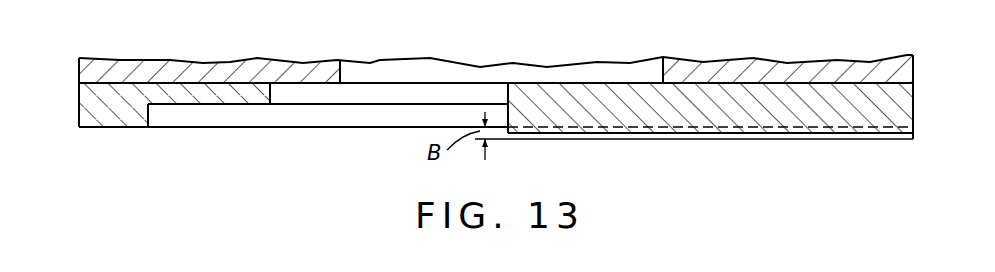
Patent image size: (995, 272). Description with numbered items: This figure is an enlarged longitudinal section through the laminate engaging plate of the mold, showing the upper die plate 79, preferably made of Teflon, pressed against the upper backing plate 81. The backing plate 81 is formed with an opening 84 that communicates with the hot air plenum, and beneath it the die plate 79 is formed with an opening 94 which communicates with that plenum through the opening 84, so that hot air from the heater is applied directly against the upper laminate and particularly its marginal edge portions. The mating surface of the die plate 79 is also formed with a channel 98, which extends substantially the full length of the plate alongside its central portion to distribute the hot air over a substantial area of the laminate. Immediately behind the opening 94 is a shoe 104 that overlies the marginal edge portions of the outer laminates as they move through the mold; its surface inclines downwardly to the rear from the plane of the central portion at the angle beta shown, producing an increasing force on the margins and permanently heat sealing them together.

The upper die plate 79 is at (573, 82).
The upper backing plate 81 is at (722, 62).
The opening 84 is at (347, 67).
The opening 94 is at (272, 92).
The channel 98 is at (253, 104).
The shoe 104 is at (622, 137).